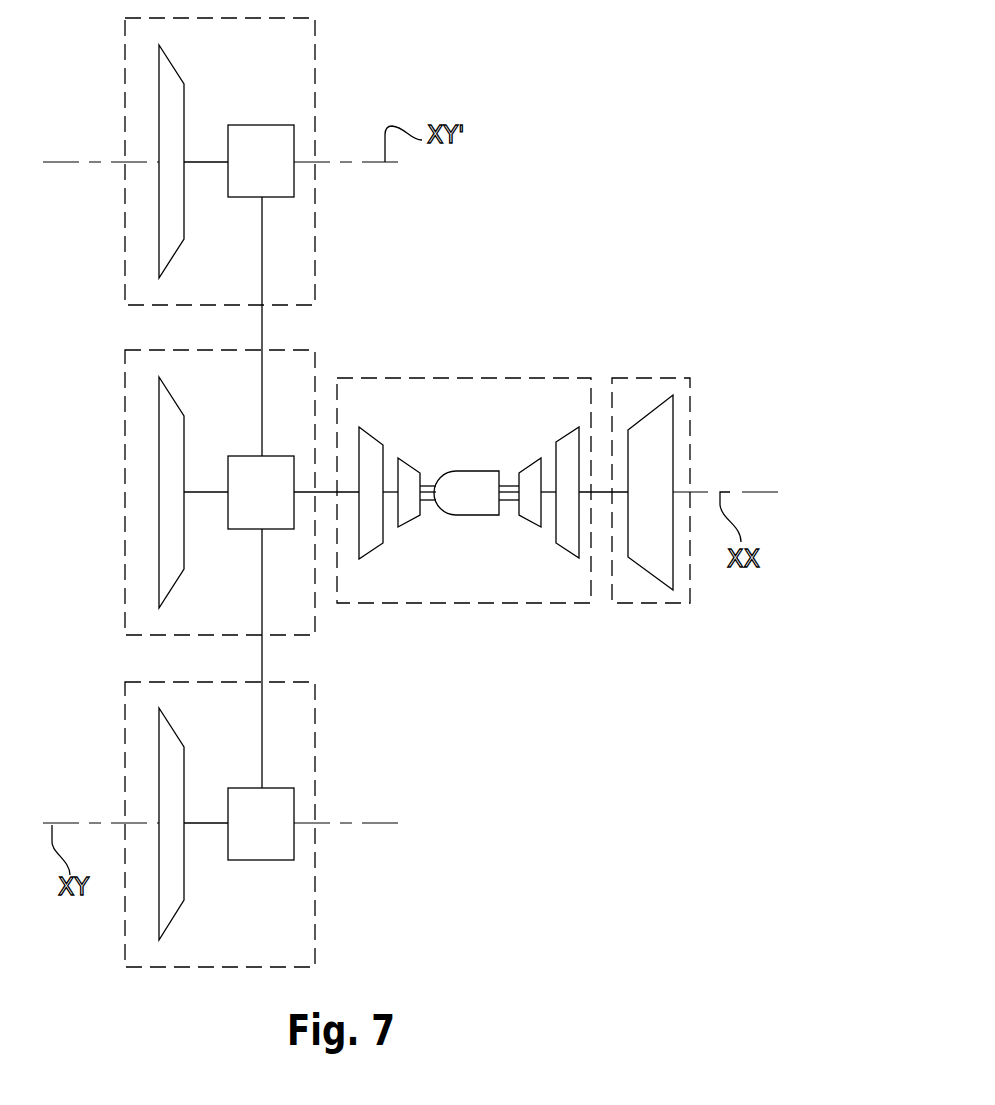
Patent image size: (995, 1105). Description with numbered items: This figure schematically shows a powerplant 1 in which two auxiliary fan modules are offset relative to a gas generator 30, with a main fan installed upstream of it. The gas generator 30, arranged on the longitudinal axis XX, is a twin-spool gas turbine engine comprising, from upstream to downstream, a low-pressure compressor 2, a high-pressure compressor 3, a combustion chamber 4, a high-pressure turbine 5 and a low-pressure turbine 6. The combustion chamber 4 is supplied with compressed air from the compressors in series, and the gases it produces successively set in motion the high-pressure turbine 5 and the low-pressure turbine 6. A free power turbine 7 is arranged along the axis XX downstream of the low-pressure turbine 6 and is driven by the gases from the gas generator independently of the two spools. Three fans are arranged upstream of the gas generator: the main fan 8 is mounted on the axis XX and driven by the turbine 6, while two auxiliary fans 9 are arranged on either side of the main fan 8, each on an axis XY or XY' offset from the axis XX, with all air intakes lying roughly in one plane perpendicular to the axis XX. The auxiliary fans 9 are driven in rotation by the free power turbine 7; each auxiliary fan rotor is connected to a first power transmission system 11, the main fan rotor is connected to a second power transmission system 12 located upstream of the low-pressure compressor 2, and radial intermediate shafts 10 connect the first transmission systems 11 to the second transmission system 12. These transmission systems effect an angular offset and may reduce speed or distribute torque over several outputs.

The powerplant 1 is at (590, 264).
The low-pressure compressor 2 is at (372, 443).
The high-pressure compressor 3 is at (408, 477).
The combustion chamber 4 is at (470, 480).
The high-pressure turbine 5 is at (528, 473).
The low-pressure turbine 6 is at (568, 447).
The free power turbine 7 is at (655, 416).
The main fan 8 is at (168, 562).
The auxiliary fan 9 is at (168, 766).
The intermediate shaft 10 is at (268, 659).
The first power transmission system 11 is at (281, 790).
The second power transmission system 12 is at (243, 523).
The gas generator 30 is at (497, 568).